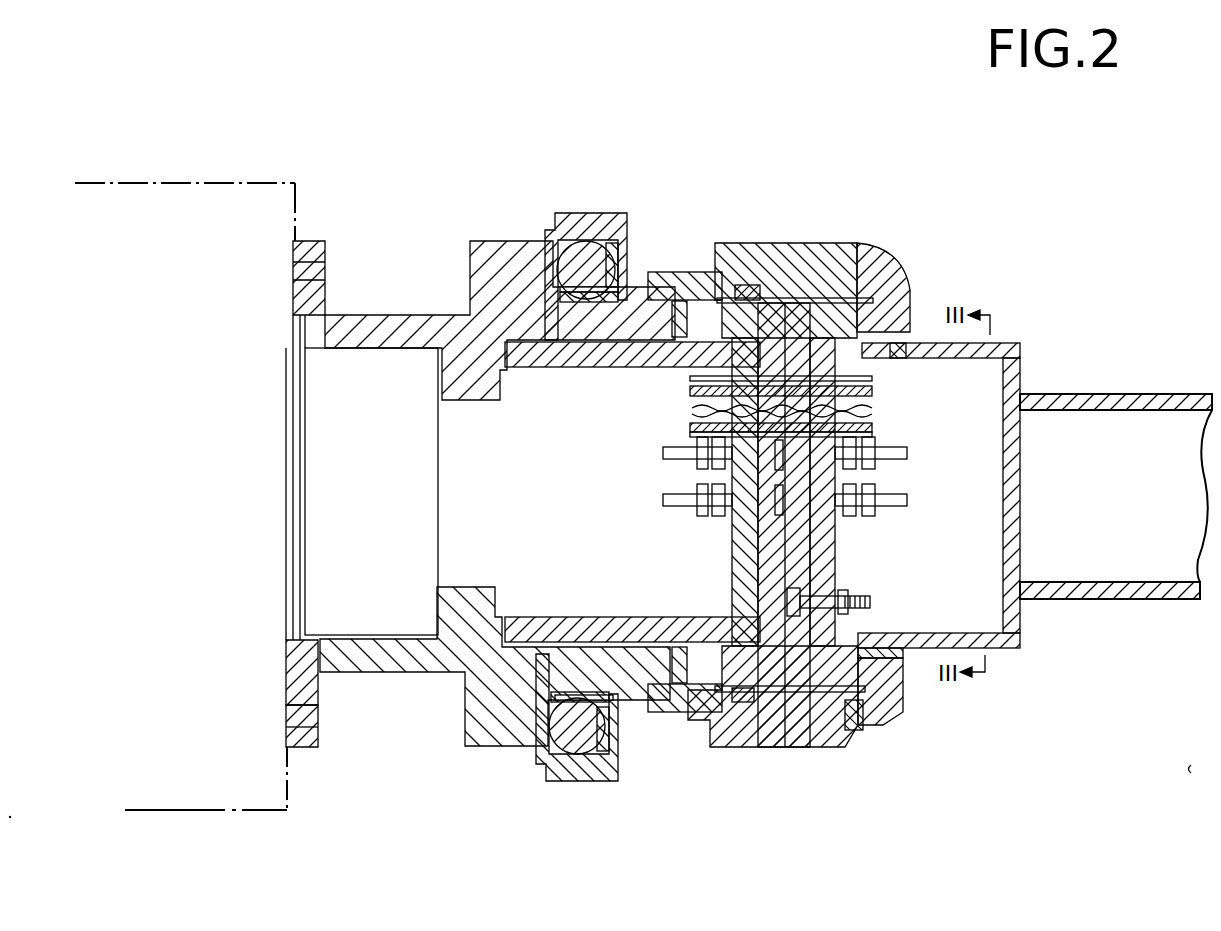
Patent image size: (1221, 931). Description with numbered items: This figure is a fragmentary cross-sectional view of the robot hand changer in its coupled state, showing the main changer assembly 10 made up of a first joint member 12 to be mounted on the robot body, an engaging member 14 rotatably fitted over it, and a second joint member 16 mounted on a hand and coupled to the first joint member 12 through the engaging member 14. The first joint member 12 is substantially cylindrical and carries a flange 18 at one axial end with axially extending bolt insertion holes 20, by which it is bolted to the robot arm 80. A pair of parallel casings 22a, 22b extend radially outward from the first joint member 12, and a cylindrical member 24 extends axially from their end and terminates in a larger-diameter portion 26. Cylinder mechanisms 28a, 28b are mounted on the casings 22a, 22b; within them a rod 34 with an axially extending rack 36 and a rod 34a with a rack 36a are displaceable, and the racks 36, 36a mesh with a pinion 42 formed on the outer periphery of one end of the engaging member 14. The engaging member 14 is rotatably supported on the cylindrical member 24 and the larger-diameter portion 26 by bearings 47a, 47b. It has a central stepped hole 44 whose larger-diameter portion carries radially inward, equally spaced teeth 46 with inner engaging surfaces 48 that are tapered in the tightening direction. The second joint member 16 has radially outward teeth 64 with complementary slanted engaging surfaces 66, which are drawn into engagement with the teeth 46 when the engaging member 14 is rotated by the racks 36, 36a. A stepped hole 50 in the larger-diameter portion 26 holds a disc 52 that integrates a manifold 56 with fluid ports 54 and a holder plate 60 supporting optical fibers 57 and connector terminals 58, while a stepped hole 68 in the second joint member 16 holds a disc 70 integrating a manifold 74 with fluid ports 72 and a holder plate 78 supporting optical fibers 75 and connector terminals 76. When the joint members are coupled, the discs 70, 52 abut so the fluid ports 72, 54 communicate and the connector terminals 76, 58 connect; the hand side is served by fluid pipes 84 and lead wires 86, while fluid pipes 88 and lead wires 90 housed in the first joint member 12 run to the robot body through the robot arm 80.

The main changer assembly 10 is at (767, 87).
The first joint member 12 is at (410, 224).
The engaging member 14 is at (800, 242).
The second joint member 16 is at (1058, 319).
The flange 18 is at (303, 750).
The bolt insertion holes 20 is at (290, 716).
The casing 22a is at (515, 240).
The casing 22b is at (500, 745).
The cylindrical member 24 is at (600, 343).
The larger-diameter portion 26 is at (770, 300).
The cylinder mechanism 28a is at (583, 214).
The cylinder mechanism 28b is at (588, 783).
The rod 34 is at (590, 297).
The rod 34a is at (586, 752).
The rack 36 is at (598, 262).
The rack 36a is at (560, 750).
The pinion 42 is at (622, 292).
The stepped hole 44 is at (862, 245).
The teeth 46 is at (900, 330).
The bearing 47a is at (685, 683).
The bearing 47b is at (745, 748).
The inner engaging surfaces 48 is at (905, 355).
The stepped hole 50 is at (790, 750).
The disc 52 is at (726, 590).
The fluid ports 54 is at (720, 510).
The manifold 56 is at (750, 548).
The optical fibers 57 is at (698, 382).
The connector terminals 58 is at (698, 428).
The holder plate 60 is at (740, 283).
The teeth 64 is at (860, 708).
The engaging surfaces 66 is at (898, 714).
The stepped hole 68 is at (902, 678).
The disc 70 is at (848, 566).
The fluid ports 72 is at (848, 512).
The manifold 74 is at (842, 600).
The optical fibers 75 is at (874, 378).
The connector terminals 76 is at (866, 426).
The holder plate 78 is at (836, 298).
The robot arm 80 is at (198, 788).
The fluid pipes 84 is at (902, 494).
The lead wires 86 is at (876, 408).
The fluid pipes 88 is at (672, 492).
The lead wires 90 is at (698, 407).